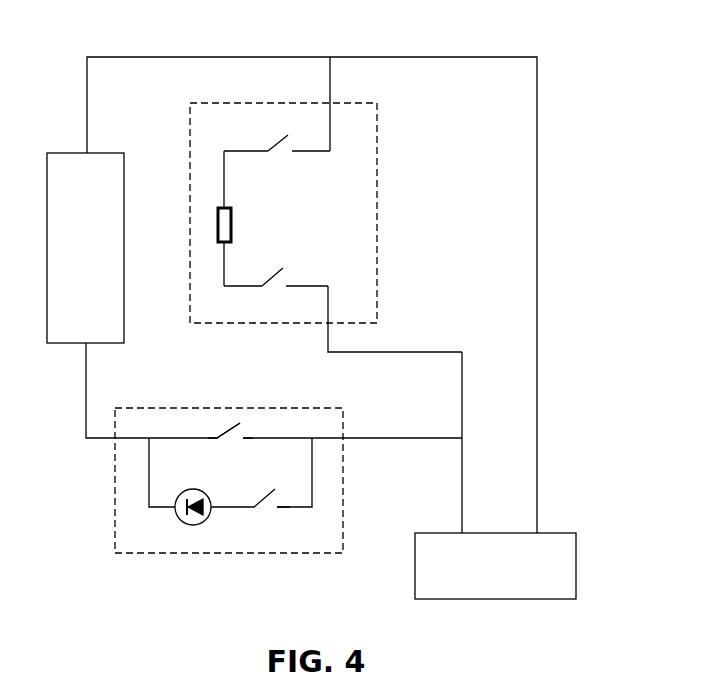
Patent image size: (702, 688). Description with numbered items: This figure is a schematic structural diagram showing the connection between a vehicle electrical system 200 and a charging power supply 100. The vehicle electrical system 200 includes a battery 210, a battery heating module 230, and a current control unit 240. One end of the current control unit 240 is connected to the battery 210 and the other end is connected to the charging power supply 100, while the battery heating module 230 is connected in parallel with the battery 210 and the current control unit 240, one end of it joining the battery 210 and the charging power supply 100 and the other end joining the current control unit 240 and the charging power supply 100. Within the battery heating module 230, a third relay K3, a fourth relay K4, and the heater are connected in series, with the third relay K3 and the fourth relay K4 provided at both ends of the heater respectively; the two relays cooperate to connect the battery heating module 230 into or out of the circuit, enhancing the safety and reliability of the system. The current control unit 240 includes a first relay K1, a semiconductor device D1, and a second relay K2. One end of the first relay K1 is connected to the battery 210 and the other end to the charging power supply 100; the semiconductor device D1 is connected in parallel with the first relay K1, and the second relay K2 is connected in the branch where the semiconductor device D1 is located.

The vehicle electrical system 200 is at (110, 8).
The battery 210 is at (125, 175).
The battery heating module 230 is at (326, 227).
The current control unit 240 is at (229, 464).
The charging power supply 100 is at (437, 532).
The first relay K1 is at (230, 448).
The second relay K2 is at (266, 516).
The third relay K3 is at (277, 154).
The fourth relay K4 is at (276, 291).
The semiconductor device D1 is at (193, 518).